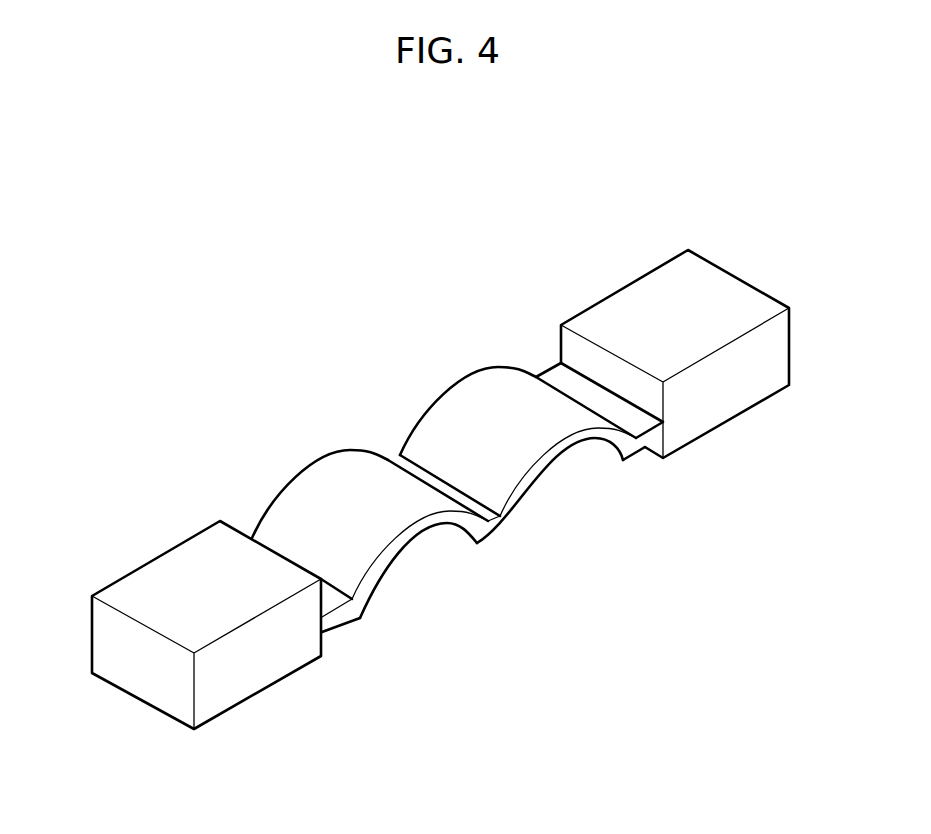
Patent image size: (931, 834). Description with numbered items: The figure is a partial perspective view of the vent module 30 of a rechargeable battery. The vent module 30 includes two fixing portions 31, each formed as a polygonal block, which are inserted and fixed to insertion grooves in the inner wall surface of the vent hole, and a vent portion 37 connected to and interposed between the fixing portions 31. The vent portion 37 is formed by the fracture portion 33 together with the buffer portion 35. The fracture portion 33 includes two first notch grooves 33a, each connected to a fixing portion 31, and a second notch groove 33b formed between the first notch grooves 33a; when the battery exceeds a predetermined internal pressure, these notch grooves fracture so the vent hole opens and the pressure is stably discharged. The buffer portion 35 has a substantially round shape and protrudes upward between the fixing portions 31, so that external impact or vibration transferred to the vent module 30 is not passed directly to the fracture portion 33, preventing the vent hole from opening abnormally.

The vent module 30 is at (283, 336).
The fixing portion 31 is at (171, 556).
The fracture portion 33 is at (493, 525).
The first notch groove 33a is at (341, 617).
The second notch groove 33b is at (493, 521).
The buffer portion 35 is at (472, 377).
The vent portion 37 is at (504, 522).